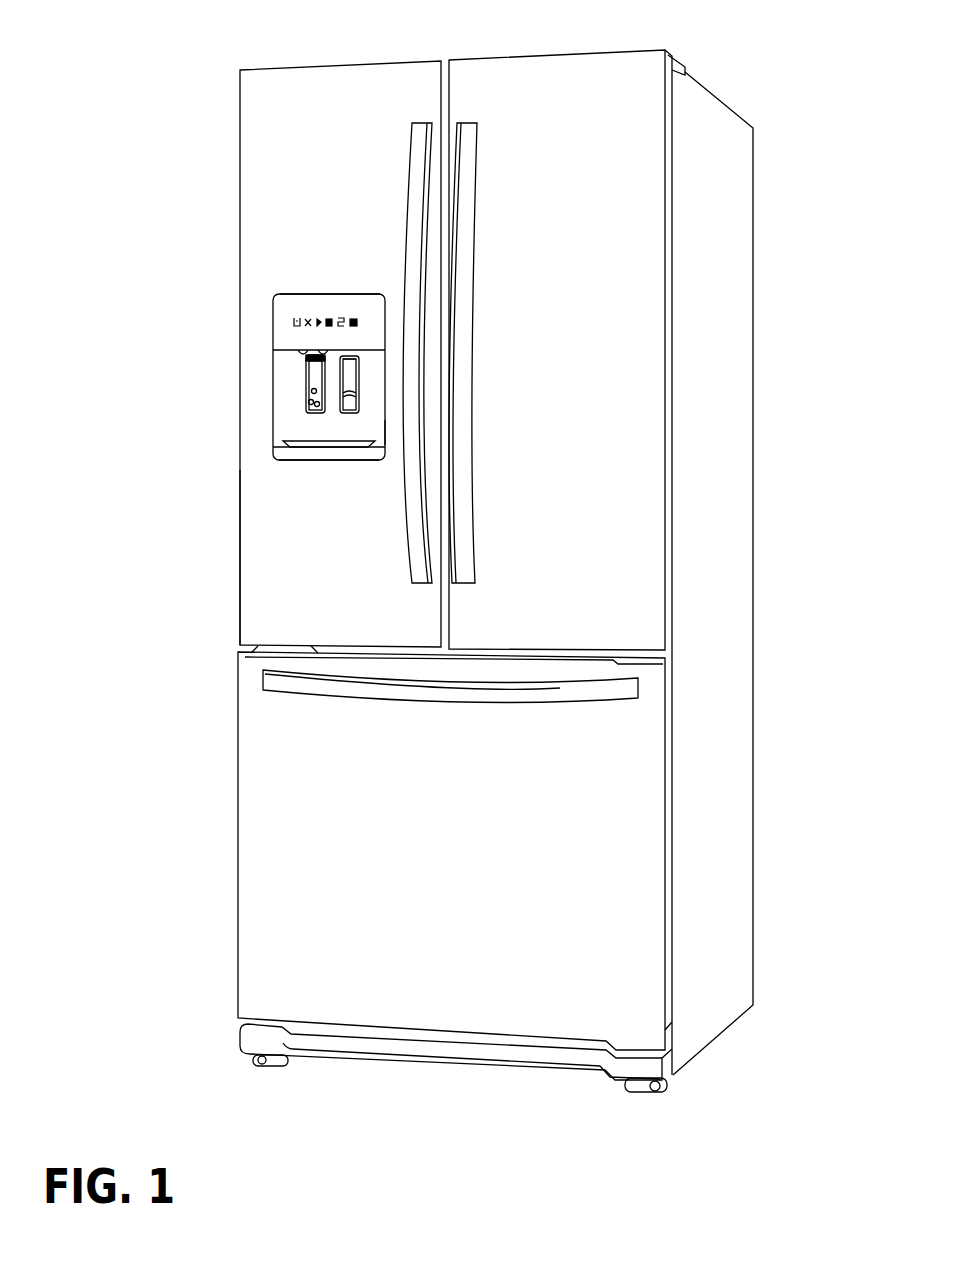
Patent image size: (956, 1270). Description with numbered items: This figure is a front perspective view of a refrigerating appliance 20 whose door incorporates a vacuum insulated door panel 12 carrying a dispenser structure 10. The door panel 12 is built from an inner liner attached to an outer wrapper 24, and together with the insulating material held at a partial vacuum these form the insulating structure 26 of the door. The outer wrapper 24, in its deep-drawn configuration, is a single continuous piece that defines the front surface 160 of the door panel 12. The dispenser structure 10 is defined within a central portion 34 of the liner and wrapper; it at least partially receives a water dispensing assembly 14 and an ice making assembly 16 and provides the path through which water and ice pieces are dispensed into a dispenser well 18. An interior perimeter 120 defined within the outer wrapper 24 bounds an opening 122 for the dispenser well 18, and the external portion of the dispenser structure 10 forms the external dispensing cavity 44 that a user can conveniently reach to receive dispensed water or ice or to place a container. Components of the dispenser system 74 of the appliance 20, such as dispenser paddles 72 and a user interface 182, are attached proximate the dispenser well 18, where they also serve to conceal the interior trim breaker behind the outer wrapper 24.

The dispenser structure 10 is at (270, 392).
The door panel 12 is at (237, 250).
The water dispensing assembly 14 is at (370, 342).
The ice making assembly 16 is at (285, 365).
The dispenser well 18 is at (290, 425).
The refrigerating appliance 20 is at (620, 37).
The outer wrapper 24 is at (263, 118).
The insulating structure 26 is at (238, 498).
The central portion 34 is at (393, 395).
The external dispensing cavity 44 is at (368, 363).
The dispenser paddles 72 is at (348, 405).
The dispenser system 74 is at (300, 290).
The interior perimeter 120 is at (383, 432).
The opening 122 is at (367, 460).
The front surface 160 is at (340, 137).
The user interface 182 is at (280, 305).